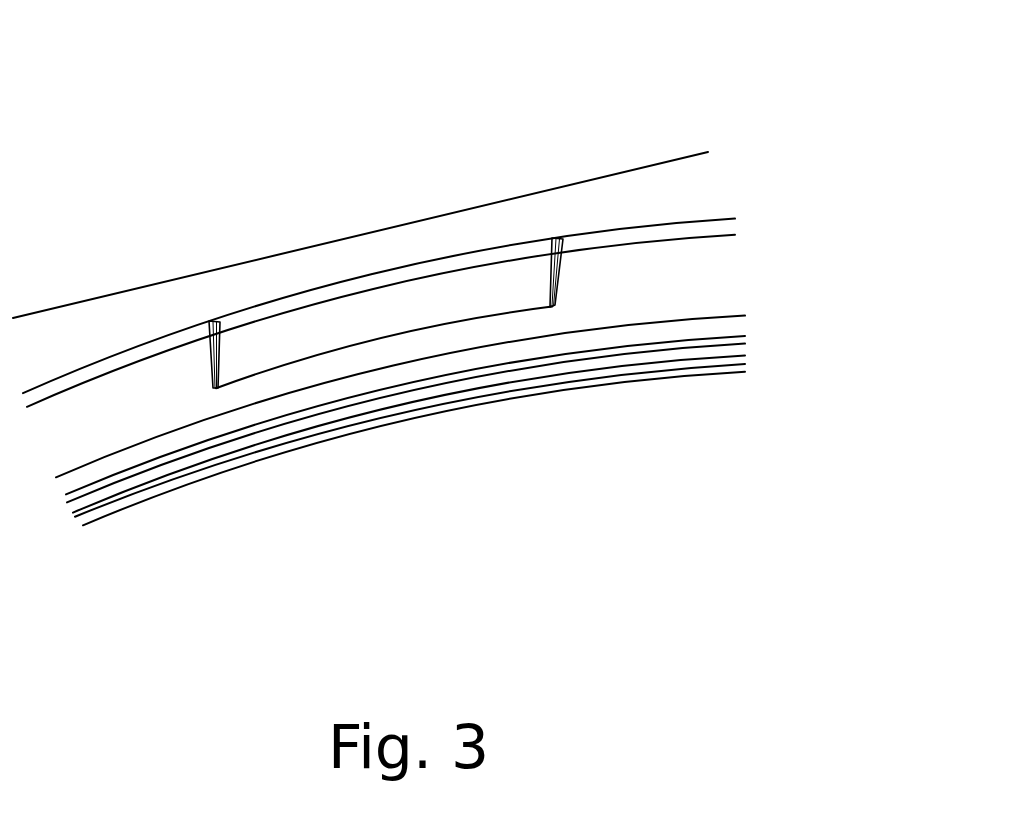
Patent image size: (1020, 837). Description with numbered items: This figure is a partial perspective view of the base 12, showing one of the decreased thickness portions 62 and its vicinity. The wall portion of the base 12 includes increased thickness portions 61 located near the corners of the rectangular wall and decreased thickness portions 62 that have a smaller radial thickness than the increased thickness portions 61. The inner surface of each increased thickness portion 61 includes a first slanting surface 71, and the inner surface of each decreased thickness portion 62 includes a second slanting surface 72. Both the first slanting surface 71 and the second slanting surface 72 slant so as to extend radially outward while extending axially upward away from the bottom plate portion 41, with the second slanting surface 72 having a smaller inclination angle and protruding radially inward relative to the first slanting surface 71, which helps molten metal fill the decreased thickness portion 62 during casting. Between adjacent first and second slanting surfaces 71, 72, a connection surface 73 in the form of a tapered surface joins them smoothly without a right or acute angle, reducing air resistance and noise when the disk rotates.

The base 12 is at (453, 120).
The bottom plate portion 41 is at (235, 540).
The increased thickness portion 61 is at (699, 188).
The decreased thickness portion 62 is at (362, 257).
The first slanting surface 71 is at (690, 282).
The second slanting surface 72 is at (373, 315).
The connection surface 73 is at (205, 350).